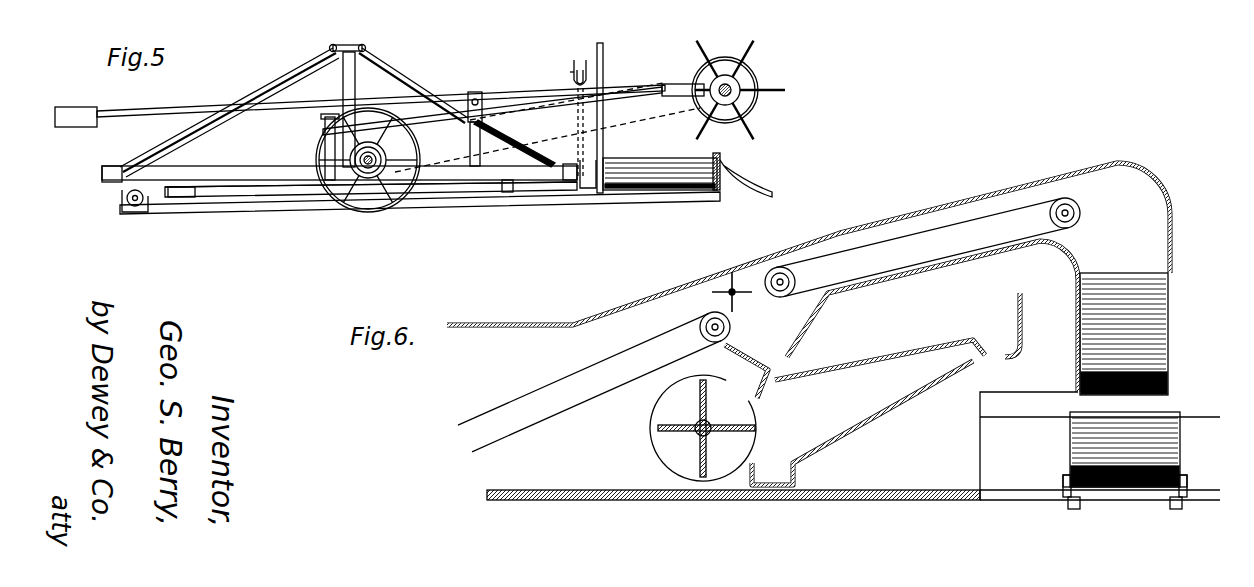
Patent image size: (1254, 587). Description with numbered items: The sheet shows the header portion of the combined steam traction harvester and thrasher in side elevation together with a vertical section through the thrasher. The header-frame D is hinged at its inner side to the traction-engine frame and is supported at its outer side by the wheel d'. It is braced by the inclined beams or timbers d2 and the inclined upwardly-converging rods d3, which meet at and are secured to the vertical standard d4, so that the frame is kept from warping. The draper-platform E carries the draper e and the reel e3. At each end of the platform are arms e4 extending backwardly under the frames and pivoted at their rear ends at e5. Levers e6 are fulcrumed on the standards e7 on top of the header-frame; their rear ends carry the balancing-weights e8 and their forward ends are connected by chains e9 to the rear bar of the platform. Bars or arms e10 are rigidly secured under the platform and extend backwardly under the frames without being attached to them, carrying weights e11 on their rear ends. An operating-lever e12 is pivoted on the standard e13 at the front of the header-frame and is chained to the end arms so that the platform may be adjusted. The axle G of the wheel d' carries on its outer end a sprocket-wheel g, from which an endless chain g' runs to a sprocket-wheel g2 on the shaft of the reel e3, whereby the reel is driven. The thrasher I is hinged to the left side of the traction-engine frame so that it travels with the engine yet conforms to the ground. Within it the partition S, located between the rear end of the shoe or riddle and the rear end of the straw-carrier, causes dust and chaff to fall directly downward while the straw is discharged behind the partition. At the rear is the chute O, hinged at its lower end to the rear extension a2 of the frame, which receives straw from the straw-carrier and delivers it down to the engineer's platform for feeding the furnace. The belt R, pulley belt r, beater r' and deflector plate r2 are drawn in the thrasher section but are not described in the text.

In FIG. 5, the balancing-weights e8 is at (76, 109).
In FIG. 5, the levers e6 is at (400, 100).
In FIG. 5, the header-frame D is at (339, 172).
In FIG. 5, the weights e11 is at (382, 170).
In FIG. 5, the bars or arms e10 is at (371, 203).
In FIG. 5, the arms e4 is at (420, 206).
In FIG. 5, the pivot e5 is at (124, 201).
In FIG. 5, the inclined upwardly-converging rods d3 is at (294, 109).
In FIG. 5, the inclined beams or timbers d2 is at (340, 117).
In FIG. 5, the vertical standard d4 is at (358, 109).
In FIG. 5, the wheel d' is at (356, 160).
In FIG. 5, the axle G is at (377, 156).
In FIG. 5, the sprocket-wheel g is at (377, 160).
In FIG. 5, the endless chain g' is at (511, 127).
In FIG. 5, the standards e7 is at (478, 120).
In FIG. 5, the operating-lever e12 is at (580, 109).
In FIG. 5, the standard e13 is at (560, 81).
In FIG. 5, the chains e9 is at (609, 118).
In FIG. 5, the draper e is at (660, 167).
In FIG. 5, the draper-platform E is at (742, 168).
In FIG. 5, the reel e3 is at (738, 90).
In FIG. 5, the sprocket-wheel g2 is at (762, 102).
In FIG. 6, the thrasher I is at (808, 244).
In FIG. 6, the partition S is at (932, 316).
In FIG. 6, the belt r is at (922, 247).
In FIG. 6, the conveyor belt R is at (594, 382).
In FIG. 6, the deflector plate r2 is at (855, 412).
In FIG. 6, the beater cross r' is at (703, 428).
In FIG. 6, the rear extension a2 is at (1100, 446).
In FIG. 6, the chute O is at (1125, 460).